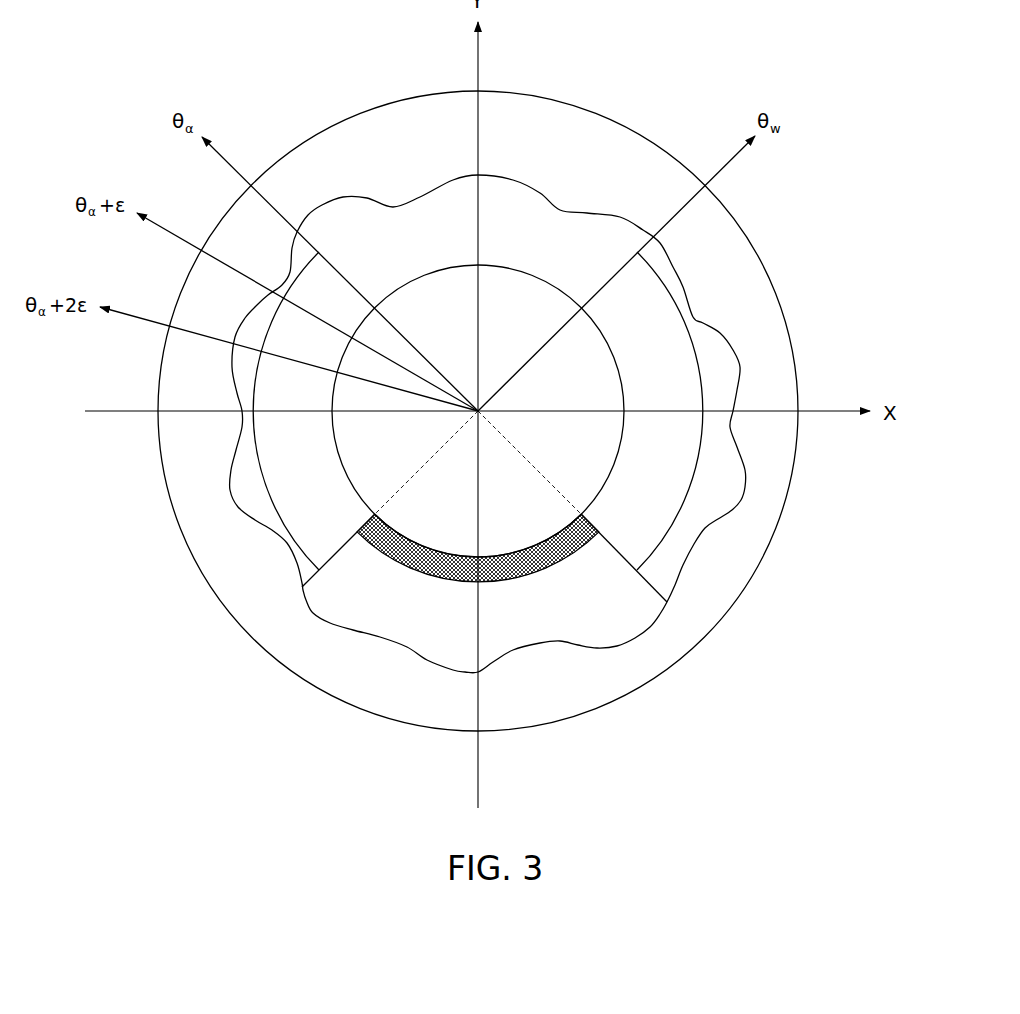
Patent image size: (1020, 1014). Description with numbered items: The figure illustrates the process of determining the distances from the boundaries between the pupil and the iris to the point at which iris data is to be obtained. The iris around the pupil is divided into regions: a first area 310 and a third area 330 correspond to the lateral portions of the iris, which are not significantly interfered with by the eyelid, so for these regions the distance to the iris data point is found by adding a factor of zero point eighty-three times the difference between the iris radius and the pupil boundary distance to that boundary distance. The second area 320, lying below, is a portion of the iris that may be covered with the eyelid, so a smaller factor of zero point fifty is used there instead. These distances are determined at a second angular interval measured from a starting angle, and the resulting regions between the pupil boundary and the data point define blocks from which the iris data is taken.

The first area 310 is at (298, 518).
The second area 320 is at (415, 560).
The third area 330 is at (672, 315).